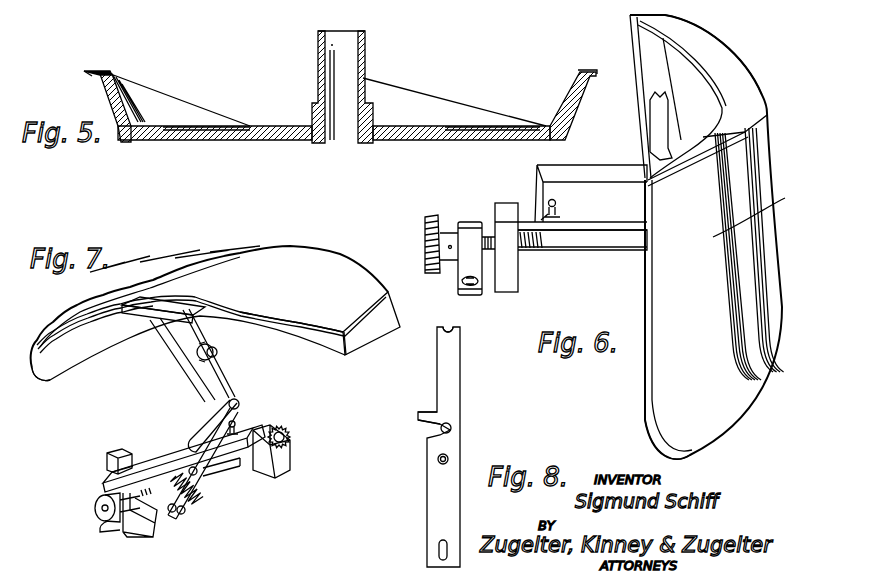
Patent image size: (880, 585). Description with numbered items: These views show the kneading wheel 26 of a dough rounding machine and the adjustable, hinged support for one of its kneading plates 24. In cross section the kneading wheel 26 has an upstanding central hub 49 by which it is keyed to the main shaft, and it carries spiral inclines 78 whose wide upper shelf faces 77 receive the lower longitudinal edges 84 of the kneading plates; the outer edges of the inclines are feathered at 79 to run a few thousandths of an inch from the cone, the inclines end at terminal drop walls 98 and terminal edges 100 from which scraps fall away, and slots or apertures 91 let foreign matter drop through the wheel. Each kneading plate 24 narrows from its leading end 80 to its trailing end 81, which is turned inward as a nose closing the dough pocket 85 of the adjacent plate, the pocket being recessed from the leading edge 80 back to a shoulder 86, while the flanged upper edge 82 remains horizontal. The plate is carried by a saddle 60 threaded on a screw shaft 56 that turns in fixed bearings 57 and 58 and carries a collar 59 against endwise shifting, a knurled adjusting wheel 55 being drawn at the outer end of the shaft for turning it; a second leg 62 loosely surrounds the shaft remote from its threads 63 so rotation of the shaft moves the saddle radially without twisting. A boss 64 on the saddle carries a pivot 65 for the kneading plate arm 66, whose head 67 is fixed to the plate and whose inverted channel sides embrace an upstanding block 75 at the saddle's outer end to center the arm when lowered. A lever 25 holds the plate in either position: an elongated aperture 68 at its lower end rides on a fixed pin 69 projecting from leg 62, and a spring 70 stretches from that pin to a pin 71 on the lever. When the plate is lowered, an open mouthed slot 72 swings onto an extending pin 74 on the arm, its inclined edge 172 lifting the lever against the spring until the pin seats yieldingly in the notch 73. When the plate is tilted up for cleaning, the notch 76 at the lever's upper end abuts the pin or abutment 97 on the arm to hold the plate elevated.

In FIG. 6, the kneading plate 24 is at (768, 150).
In FIG. 7, the kneading plate 24 is at (290, 262).
In FIG. 6, the lever 25 is at (660, 115).
In FIG. 7, the lever 25 is at (212, 420).
In FIG. 8, the lever 25 is at (462, 397).
In FIG. 5, the kneading wheel 26 is at (258, 128).
In FIG. 5, the upstanding central hub 49 is at (366, 48).
In FIG. 6, the knurled knob 55 is at (425, 247).
In FIG. 7, the knurled knob 55 is at (292, 430).
In FIG. 6, the screw shaft 56 is at (618, 248).
In FIG. 7, the screw shaft 56 is at (248, 470).
In FIG. 6, the fixed bearing 57 is at (466, 262).
In FIG. 7, the fixed bearing 57 is at (292, 450).
In FIG. 7, the fixed bearing 58 is at (104, 521).
In FIG. 7, the collar 59 is at (95, 507).
In FIG. 6, the saddle 60 is at (605, 214).
In FIG. 7, the saddle 60 is at (150, 468).
In FIG. 6, the second leg 62 is at (512, 275).
In FIG. 7, the second leg 62 is at (125, 527).
In FIG. 6, the threads 63 is at (526, 252).
In FIG. 6, the boss 64 is at (524, 193).
In FIG. 6, the pivot 65 is at (556, 200).
In FIG. 7, the pivot 65 is at (238, 426).
In FIG. 6, the kneading plate arm 66 is at (604, 163).
In FIG. 7, the kneading plate arm 66 is at (200, 376).
In FIG. 7, the head 67 is at (148, 318).
In FIG. 8, the elongated aperture 68 is at (438, 551).
In FIG. 7, the fixed pin 69 is at (185, 514).
In FIG. 7, the spring 70 is at (204, 497).
In FIG. 7, the pin 71 is at (199, 473).
In FIG. 8, the pin 71 is at (438, 462).
In FIG. 7, the open mouthed slot 72 is at (192, 445).
In FIG. 8, the open mouthed slot 72 is at (432, 432).
In FIG. 8, the notch 73 is at (452, 430).
In FIG. 7, the extending pin 74 is at (222, 354).
In FIG. 7, the upstanding block 75 is at (110, 452).
In FIG. 8, the notch 76 is at (454, 325).
In FIG. 5, the upper shelf faces 77 is at (98, 70).
In FIG. 5, the spiral inclines 78 is at (142, 102).
In FIG. 5, the feathered outer edges 79 is at (85, 72).
In FIG. 6, the leading end 80 is at (642, 382).
In FIG. 7, the leading end 80 is at (85, 378).
In FIG. 6, the trailing end nose 81 is at (634, 18).
In FIG. 7, the trailing end nose 81 is at (378, 335).
In FIG. 6, the flanged upper edge 82 is at (718, 52).
In FIG. 7, the flanged upper edge 82 is at (392, 306).
In FIG. 6, the lower longitudinal edge 84 is at (748, 410).
In FIG. 7, the lower longitudinal edge 84 is at (236, 314).
In FIG. 6, the pocket 85 is at (790, 205).
In FIG. 6, the shoulder 86 is at (745, 140).
In FIG. 5, the slots or apertures 91 is at (155, 133).
In FIG. 7, the extending pin or abutment 97 is at (240, 400).
In FIG. 5, the terminal drop walls 98 is at (330, 90).
In FIG. 5, the terminal edges 100 is at (345, 73).
In FIG. 7, the inclined edge 172 is at (198, 448).
In FIG. 8, the inclined edge 172 is at (422, 417).